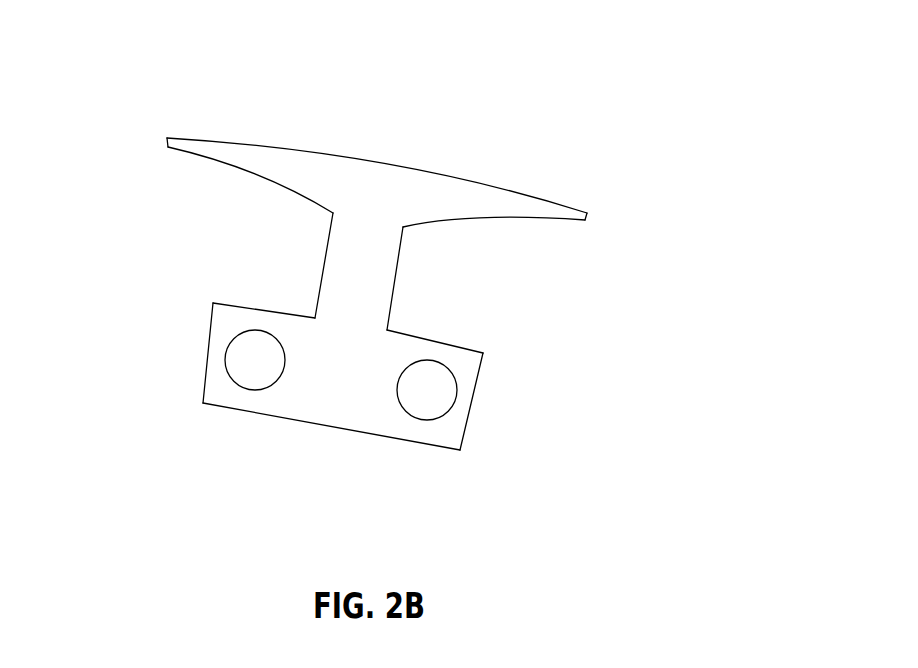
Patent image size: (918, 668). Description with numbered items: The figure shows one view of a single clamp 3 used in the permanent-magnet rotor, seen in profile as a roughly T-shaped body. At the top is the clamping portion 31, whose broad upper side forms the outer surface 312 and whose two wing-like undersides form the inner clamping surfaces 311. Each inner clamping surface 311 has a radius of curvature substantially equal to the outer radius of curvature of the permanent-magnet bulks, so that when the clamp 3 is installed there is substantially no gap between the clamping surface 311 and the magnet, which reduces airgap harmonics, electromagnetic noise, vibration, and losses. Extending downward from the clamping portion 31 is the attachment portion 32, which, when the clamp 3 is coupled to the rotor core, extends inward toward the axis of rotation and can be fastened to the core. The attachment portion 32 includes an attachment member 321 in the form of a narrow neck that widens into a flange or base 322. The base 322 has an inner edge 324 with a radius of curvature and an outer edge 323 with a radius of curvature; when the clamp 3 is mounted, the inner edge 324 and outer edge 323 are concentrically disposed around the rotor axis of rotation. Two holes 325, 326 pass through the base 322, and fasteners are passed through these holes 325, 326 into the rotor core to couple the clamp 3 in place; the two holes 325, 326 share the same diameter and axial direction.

The clamp 3 is at (475, 126).
The clamping portion 31 is at (362, 159).
The inner clamping surface 311 is at (597, 263).
The outer surface 312 is at (305, 153).
The attachment portion 32 is at (255, 266).
The attachment member 321 is at (380, 283).
The base 322 is at (340, 393).
The outer edge 323 is at (238, 305).
The inner edge 324 is at (253, 410).
The hole 325 is at (423, 398).
The hole 326 is at (243, 368).